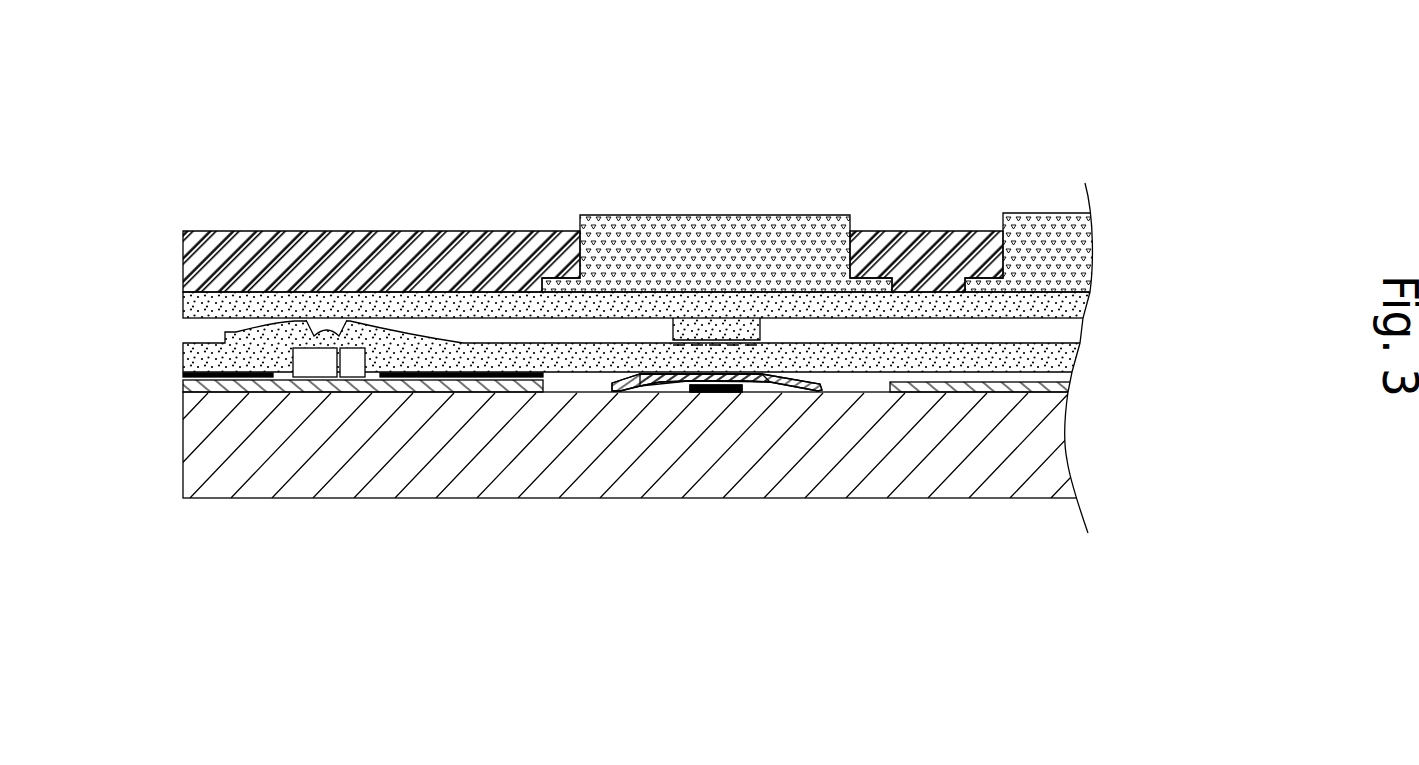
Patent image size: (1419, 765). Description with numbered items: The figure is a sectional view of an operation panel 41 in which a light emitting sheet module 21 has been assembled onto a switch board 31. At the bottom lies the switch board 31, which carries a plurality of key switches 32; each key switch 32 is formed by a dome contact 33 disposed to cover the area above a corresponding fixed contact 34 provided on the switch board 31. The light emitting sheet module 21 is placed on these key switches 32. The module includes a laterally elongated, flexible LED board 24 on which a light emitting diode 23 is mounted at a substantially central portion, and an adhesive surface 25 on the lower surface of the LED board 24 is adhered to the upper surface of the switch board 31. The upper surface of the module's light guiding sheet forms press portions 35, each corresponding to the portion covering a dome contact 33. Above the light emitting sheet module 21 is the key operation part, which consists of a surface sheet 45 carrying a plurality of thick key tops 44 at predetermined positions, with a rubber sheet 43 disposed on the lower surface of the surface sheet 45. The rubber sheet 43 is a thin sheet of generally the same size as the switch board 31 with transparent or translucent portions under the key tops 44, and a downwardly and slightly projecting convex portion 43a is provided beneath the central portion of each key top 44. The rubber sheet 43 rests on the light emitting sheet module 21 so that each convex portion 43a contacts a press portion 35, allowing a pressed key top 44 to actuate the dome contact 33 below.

The light emitting sheet module 21 is at (648, 388).
The light emitting diode 23 is at (307, 360).
The LED board 24 is at (185, 379).
The adhesive surface 25 is at (183, 390).
The switch board 31 is at (953, 483).
The key switch 32 is at (760, 390).
The dome contact 33 is at (677, 393).
The fixed contact 34 is at (713, 393).
The press portion 35 is at (628, 393).
The operation panel 41 is at (597, 233).
The rubber sheet 43 is at (200, 312).
The convex portion 43a is at (673, 328).
The key top 44 is at (764, 228).
The surface sheet 45 is at (458, 238).